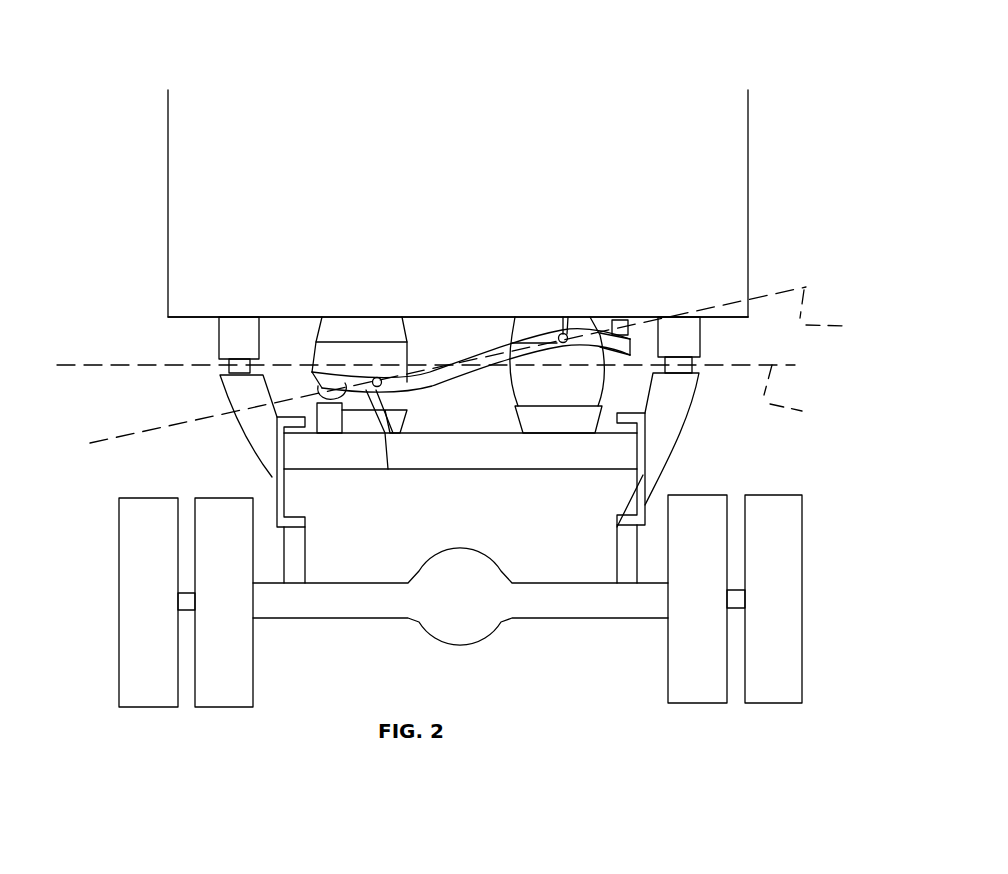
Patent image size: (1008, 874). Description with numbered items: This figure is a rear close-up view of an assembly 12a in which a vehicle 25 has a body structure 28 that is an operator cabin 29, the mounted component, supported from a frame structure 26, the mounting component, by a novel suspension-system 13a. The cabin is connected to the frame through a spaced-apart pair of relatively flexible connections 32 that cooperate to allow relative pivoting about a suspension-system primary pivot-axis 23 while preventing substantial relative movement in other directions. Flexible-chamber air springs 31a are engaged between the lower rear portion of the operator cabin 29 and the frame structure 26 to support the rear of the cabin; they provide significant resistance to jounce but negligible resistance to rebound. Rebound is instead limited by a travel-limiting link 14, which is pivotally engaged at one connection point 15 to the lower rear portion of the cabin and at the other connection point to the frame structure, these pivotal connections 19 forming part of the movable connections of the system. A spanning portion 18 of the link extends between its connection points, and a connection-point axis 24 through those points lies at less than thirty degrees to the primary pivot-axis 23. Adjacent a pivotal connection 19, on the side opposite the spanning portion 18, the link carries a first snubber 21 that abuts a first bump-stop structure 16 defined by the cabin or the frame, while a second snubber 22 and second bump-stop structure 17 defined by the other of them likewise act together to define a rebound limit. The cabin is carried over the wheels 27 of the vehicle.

The assembly 12a is at (138, 226).
The novel suspension-system 13a is at (180, 346).
The travel-limiting link 14 is at (457, 372).
The connection point 15 is at (388, 469).
The first bump-stop structure 16 is at (330, 422).
The second bump-stop structure 17 is at (600, 330).
The spanning portion 18 is at (458, 358).
The pivotal connection 19 is at (372, 365).
The first snubber 21 is at (312, 382).
The second snubber 22 is at (619, 334).
The suspension-system primary pivot-axis 23 is at (447, 394).
The connection-point axis 24 is at (486, 365).
The vehicle 25 is at (440, 115).
The frame structure 26 is at (586, 460).
The wheels 27 is at (228, 655).
The body structure 28 is at (748, 186).
The operator cabin 29 is at (727, 241).
The flexible-chamber air spring 31a is at (347, 350).
The relatively flexible connection 32 is at (222, 368).